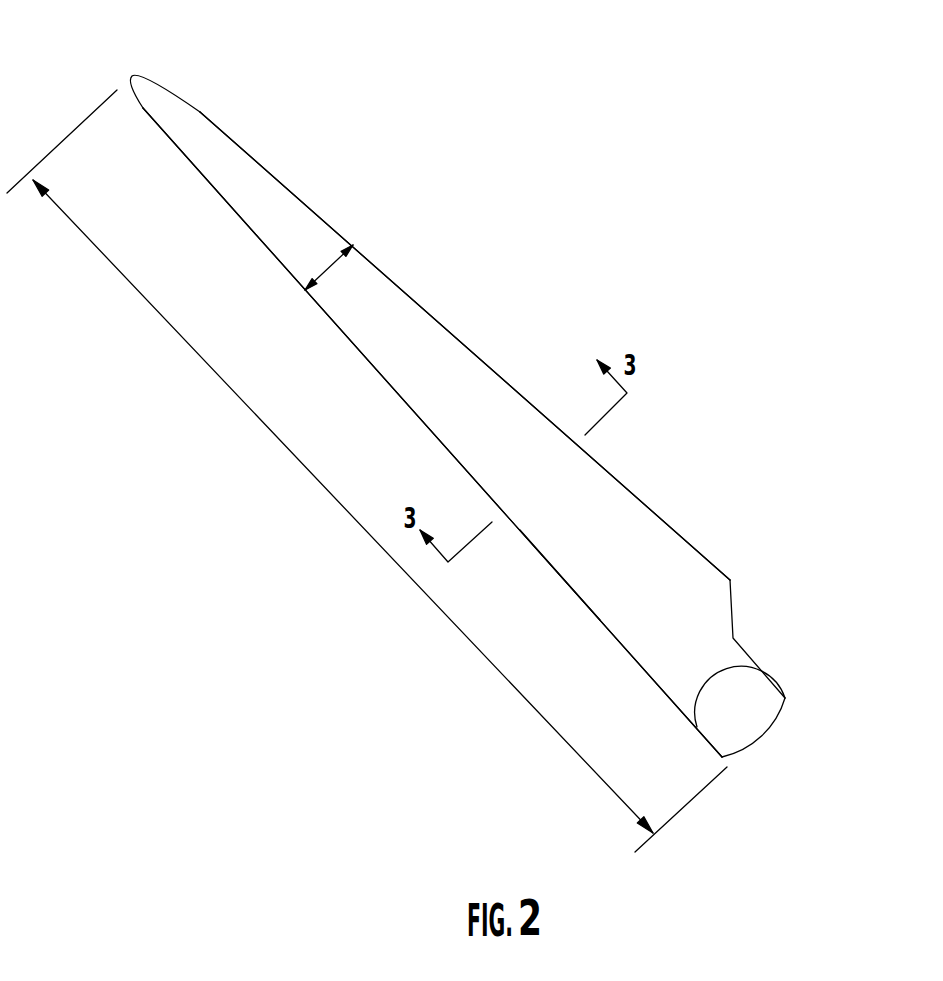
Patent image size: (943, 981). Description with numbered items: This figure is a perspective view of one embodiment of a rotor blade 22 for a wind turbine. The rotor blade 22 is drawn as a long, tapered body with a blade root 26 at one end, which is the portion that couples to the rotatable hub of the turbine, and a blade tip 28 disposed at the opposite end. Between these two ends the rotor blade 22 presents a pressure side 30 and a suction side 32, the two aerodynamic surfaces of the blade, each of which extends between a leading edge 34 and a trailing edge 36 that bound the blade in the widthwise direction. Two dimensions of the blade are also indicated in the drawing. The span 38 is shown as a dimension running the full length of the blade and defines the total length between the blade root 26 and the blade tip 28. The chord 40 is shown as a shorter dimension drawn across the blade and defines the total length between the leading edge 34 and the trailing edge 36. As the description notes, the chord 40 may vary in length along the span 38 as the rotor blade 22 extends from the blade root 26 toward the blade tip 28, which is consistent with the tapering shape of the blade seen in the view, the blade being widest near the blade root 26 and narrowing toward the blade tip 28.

The rotor blade 22 is at (423, 427).
The blade root 26 is at (760, 690).
The blade tip 28 is at (129, 74).
The pressure side 30 is at (574, 572).
The suction side 32 is at (452, 360).
The leading edge 34 is at (333, 325).
The trailing edge 36 is at (310, 200).
The span 38 is at (235, 395).
The chord 40 is at (327, 265).